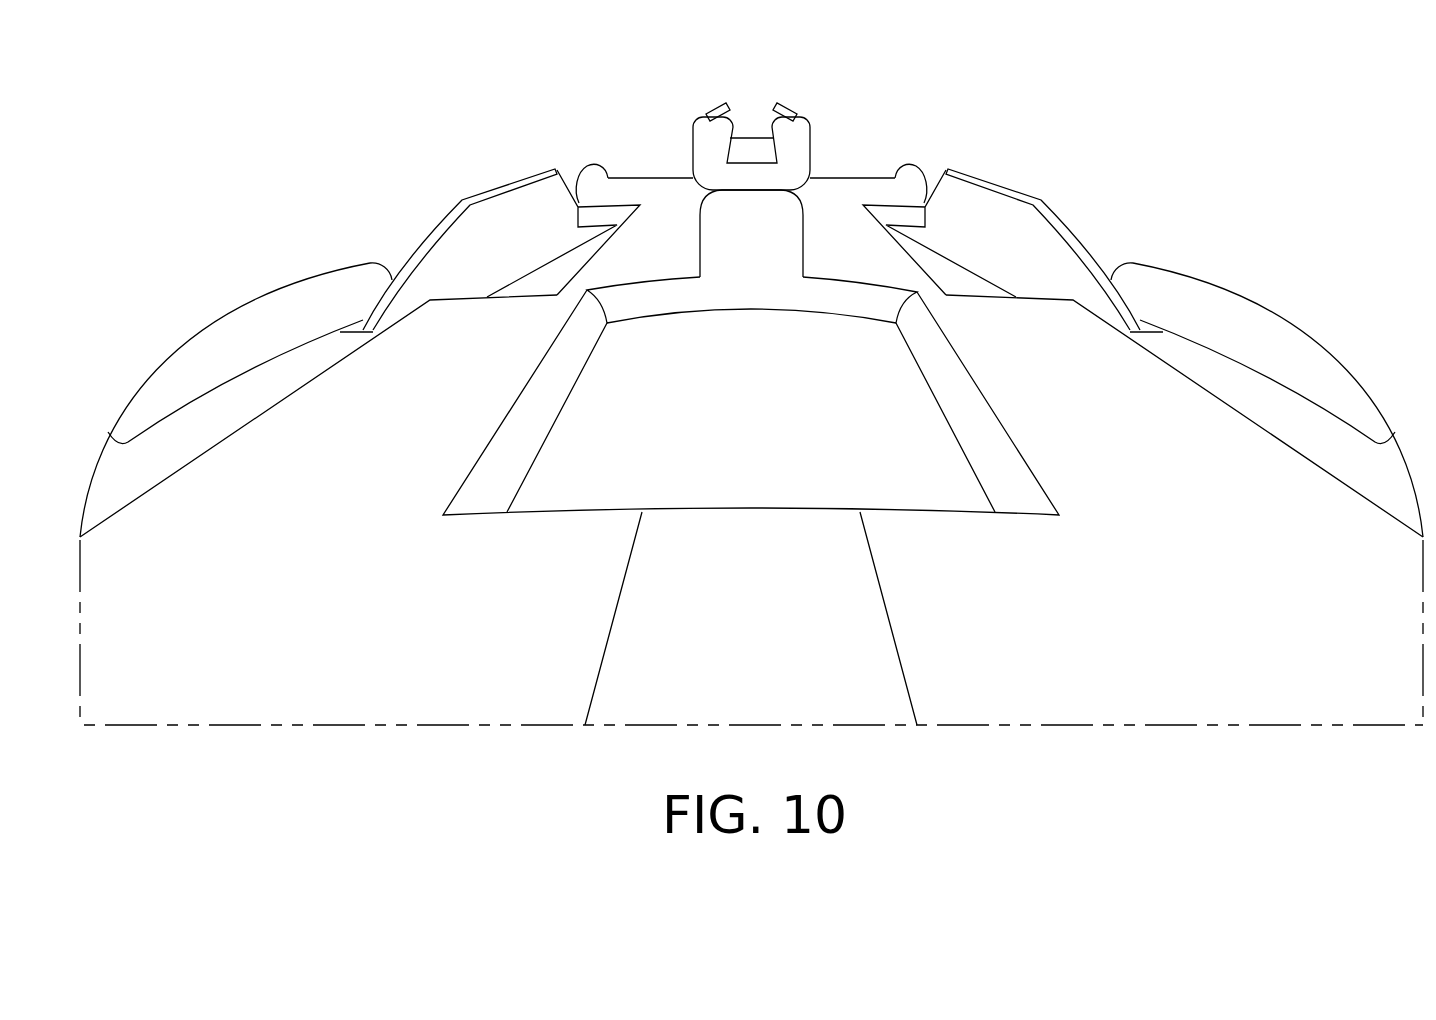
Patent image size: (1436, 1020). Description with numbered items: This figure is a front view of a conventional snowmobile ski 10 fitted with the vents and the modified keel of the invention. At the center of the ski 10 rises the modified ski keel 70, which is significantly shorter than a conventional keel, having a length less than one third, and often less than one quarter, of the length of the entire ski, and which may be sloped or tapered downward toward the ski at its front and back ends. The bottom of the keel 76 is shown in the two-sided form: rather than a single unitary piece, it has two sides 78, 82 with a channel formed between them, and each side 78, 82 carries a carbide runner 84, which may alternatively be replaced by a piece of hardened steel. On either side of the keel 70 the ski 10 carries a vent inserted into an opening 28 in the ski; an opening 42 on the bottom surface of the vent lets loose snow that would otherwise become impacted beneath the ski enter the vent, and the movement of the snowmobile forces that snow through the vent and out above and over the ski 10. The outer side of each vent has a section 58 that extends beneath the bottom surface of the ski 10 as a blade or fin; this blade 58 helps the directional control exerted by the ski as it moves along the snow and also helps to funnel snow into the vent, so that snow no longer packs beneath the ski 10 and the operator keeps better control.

The ski 10 is at (751, 381).
The opening 28 is at (913, 169).
The opening 42 is at (921, 247).
The blade 58 is at (1023, 190).
The modified ski keel 70 is at (787, 233).
The bottom of the keel 76 is at (751, 148).
The side 78 is at (720, 106).
The side 82 is at (782, 106).
The carbide runner 84 is at (750, 79).